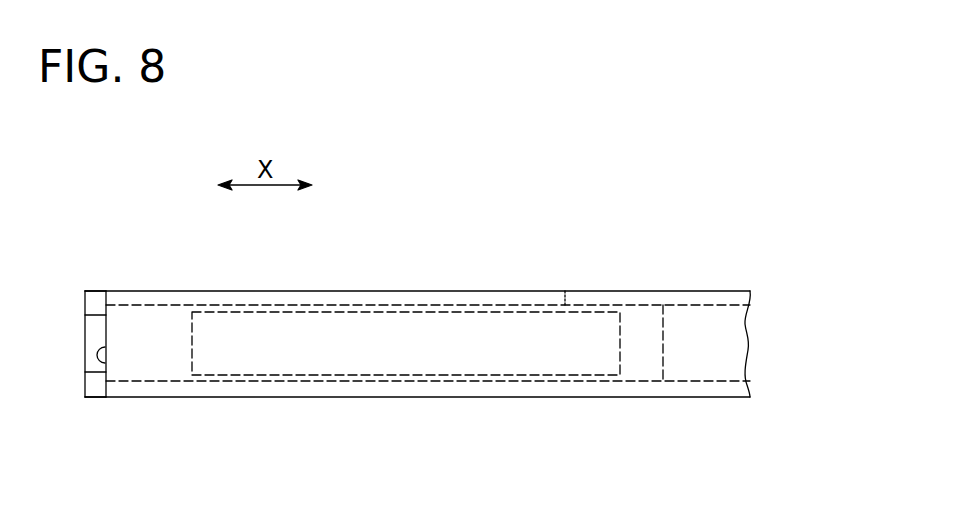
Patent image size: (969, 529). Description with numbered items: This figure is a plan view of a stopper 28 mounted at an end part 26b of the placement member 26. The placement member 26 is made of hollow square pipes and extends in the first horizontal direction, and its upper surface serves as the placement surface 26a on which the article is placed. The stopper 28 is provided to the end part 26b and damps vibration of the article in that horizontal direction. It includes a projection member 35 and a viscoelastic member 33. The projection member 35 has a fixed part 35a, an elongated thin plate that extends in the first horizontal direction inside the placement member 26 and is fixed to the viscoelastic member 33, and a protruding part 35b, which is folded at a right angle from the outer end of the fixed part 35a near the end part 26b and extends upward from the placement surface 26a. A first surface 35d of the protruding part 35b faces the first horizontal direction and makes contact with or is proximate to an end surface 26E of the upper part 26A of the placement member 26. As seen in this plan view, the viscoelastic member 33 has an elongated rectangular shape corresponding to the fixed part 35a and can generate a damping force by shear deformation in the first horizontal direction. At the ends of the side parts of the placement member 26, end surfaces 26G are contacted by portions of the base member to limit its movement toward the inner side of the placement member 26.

The placement member 26 is at (497, 290).
The upper part 26A is at (747, 337).
The placement surface 26a is at (736, 359).
The end part 26b is at (135, 338).
The end surface 26E is at (97, 353).
The end surface 26G is at (105, 302).
The stopper 28 is at (445, 306).
The viscoelastic member 33 is at (367, 337).
The projection member 35 is at (643, 341).
The fixed part 35a is at (566, 290).
The protruding part 35b is at (95, 326).
The first surface 35d is at (135, 338).